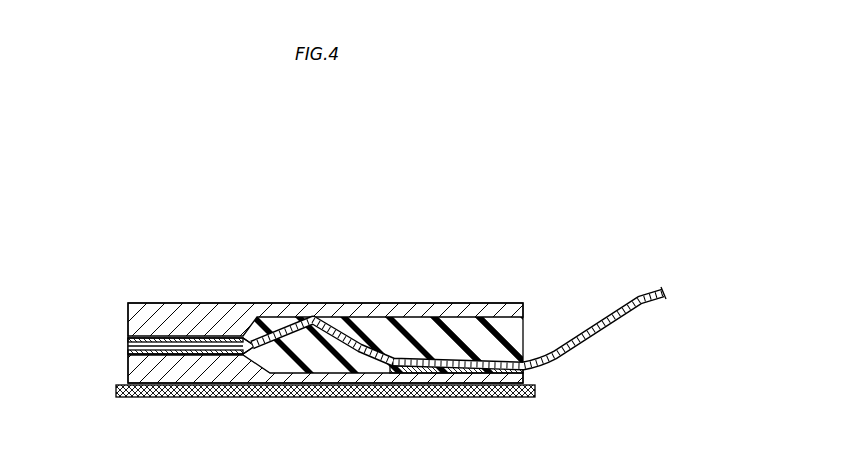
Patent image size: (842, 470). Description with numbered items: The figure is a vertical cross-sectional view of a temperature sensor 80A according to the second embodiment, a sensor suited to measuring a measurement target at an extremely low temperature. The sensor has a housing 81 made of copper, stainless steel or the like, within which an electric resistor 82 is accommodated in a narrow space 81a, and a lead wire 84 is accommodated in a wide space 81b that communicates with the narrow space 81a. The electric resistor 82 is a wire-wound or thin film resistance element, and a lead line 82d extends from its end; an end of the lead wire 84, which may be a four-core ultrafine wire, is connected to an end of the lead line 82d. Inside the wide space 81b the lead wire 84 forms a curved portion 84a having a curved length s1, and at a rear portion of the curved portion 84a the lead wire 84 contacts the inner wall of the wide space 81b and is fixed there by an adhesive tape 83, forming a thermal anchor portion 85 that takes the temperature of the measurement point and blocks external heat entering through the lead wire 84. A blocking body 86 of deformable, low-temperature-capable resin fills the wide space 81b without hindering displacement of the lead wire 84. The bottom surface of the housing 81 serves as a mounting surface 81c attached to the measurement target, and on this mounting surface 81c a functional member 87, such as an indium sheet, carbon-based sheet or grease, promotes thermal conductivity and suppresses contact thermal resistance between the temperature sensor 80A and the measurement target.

The temperature sensor 80A is at (332, 210).
The housing 81 is at (216, 303).
The narrow space 81a is at (174, 336).
The wide space 81b is at (370, 322).
The mounting surface 81c is at (128, 382).
The electric resistor 82 is at (132, 341).
The lead line 82d is at (258, 355).
The adhesive tape 83 is at (463, 360).
The lead wire 84 is at (378, 362).
The curved portion 84a is at (317, 333).
The thermal anchor portion 85 is at (501, 333).
The blocking body 86 is at (426, 311).
The functional member 87 is at (150, 397).
The curved length s1 is at (280, 326).